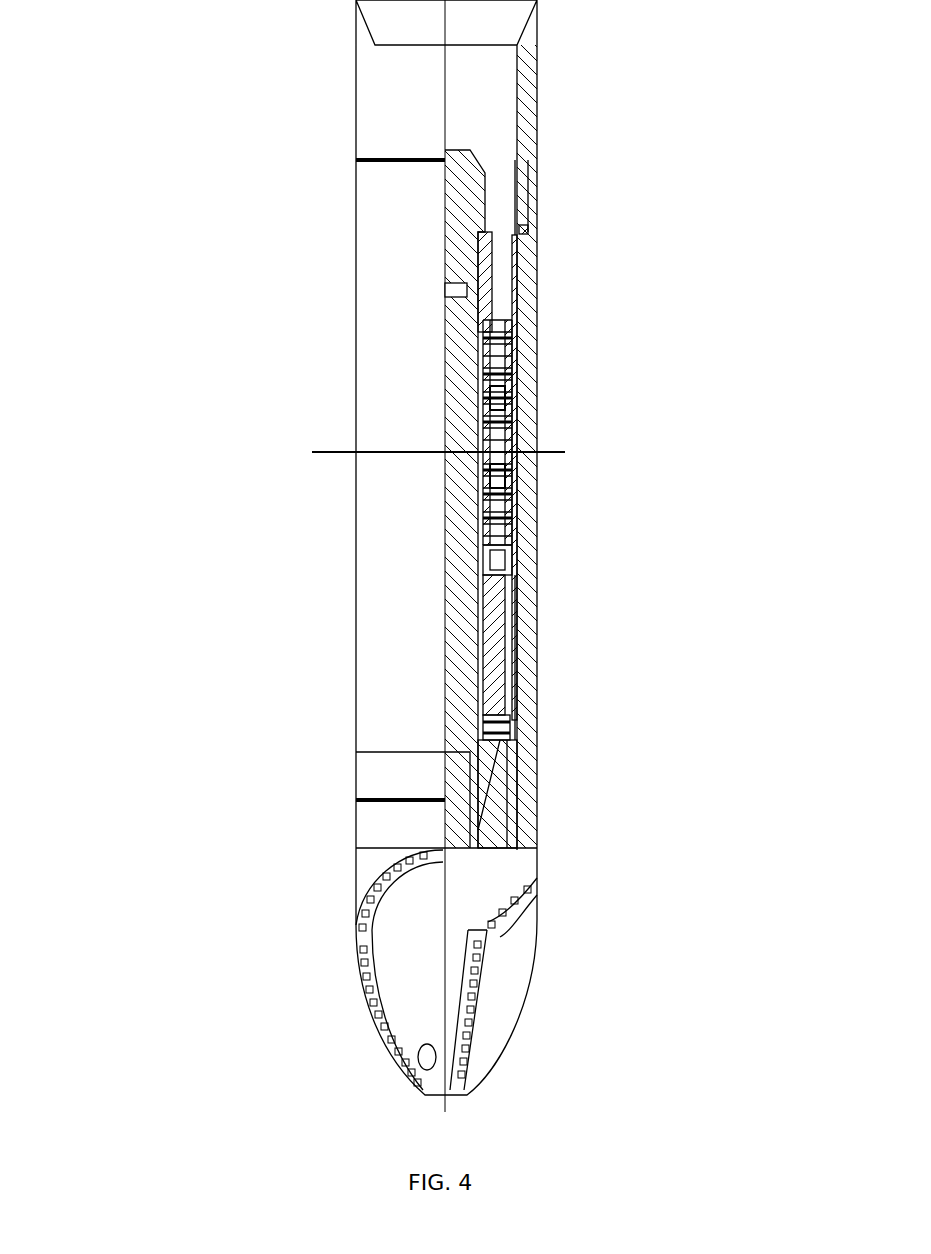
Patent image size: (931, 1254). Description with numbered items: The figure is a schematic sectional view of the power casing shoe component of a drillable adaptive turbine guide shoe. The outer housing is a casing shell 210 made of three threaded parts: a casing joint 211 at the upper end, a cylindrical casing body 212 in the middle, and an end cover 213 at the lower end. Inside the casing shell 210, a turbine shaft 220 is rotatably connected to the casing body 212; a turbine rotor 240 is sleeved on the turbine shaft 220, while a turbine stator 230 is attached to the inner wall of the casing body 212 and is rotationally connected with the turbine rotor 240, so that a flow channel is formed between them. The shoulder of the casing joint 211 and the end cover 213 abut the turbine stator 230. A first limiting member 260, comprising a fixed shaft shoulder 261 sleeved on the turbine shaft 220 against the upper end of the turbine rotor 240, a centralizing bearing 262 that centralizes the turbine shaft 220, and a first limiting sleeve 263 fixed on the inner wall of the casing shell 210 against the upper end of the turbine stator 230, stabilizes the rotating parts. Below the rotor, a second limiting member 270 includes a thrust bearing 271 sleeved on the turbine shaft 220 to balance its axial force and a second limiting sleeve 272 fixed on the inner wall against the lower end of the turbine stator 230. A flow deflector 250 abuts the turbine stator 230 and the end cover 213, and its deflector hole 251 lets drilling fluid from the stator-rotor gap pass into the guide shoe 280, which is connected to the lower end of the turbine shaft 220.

The casing shell 210 is at (222, 102).
The casing joint 211 is at (515, 148).
The casing body 212 is at (472, 278).
The end cover 213 is at (470, 795).
The turbine shaft 220 is at (540, 335).
The turbine stator 230 is at (540, 418).
The turbine rotor 240 is at (540, 475).
The flow deflector 250 is at (535, 570).
The deflector hole 251 is at (535, 628).
The first limiting member 260 is at (621, 428).
The fixed shaft shoulder 261 is at (468, 182).
The centralizing bearing 262 is at (545, 268).
The first limiting sleeve 263 is at (680, 215).
The second limiting member 270 is at (630, 698).
The thrust bearing 271 is at (535, 663).
The second limiting sleeve 272 is at (535, 728).
The guide shoe 280 is at (471, 907).